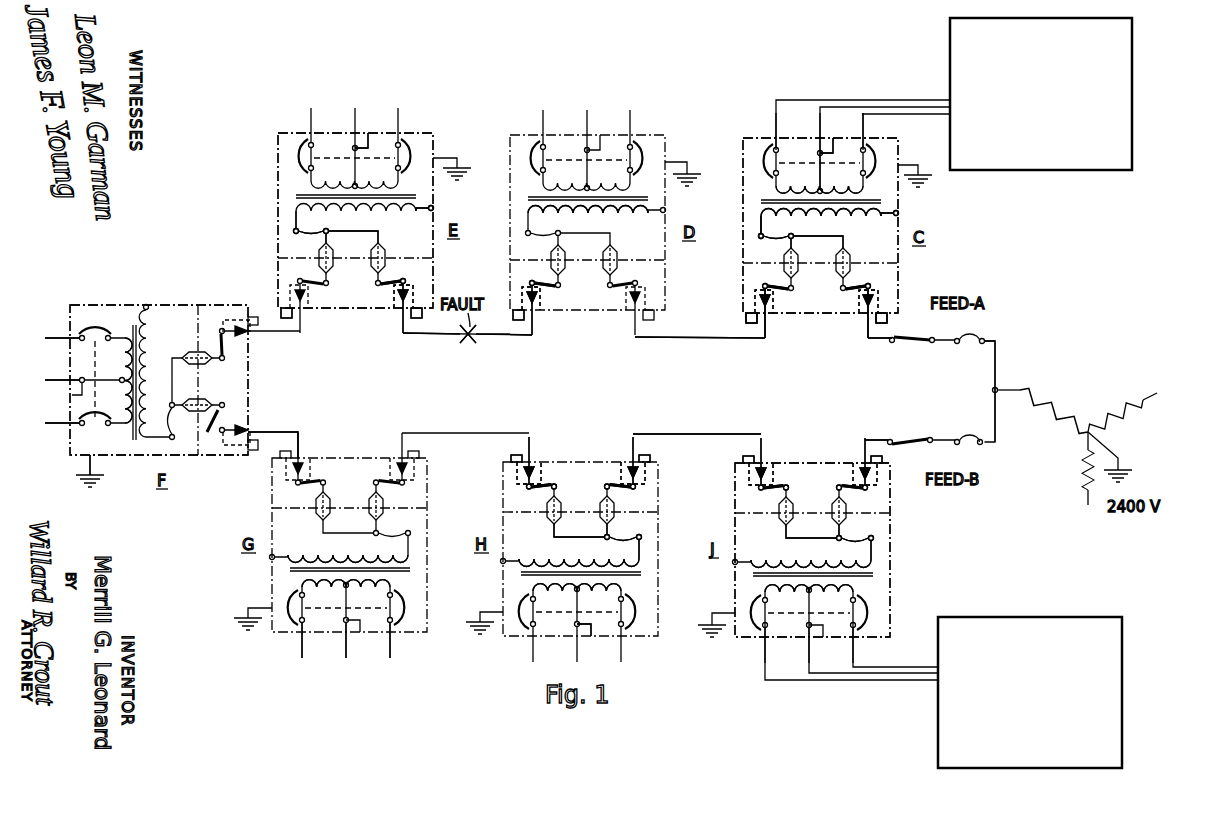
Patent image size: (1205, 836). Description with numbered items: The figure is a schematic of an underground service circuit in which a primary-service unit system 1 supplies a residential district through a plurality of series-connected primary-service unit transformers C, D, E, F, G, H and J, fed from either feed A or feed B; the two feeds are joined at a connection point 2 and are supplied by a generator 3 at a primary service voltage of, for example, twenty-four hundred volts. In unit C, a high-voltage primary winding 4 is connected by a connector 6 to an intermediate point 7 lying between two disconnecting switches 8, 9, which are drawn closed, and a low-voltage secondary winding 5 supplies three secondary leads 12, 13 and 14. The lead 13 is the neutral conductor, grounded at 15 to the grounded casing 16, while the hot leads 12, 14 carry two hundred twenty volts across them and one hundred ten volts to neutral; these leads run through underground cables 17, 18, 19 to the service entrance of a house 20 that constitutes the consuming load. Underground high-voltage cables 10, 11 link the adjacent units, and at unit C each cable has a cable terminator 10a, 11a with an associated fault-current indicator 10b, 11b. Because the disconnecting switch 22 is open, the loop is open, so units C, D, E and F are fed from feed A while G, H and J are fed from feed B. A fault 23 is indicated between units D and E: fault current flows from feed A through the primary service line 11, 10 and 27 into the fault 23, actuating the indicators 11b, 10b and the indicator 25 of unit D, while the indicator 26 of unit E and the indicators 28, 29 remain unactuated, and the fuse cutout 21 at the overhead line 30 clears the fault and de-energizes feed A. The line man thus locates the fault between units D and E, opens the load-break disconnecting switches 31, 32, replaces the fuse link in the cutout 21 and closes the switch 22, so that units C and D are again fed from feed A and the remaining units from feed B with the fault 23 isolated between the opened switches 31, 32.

The primary-service unit system 1 is at (1017, 243).
The connection point of feed A and feed B 2 is at (992, 390).
The generator 3 is at (1099, 399).
The high-voltage primary winding 4 is at (626, 214).
The low-voltage secondary winding 5 is at (843, 191).
The connector 6 is at (754, 239).
The intermediate point 7 is at (349, 232).
The disconnecting switch 8 is at (783, 286).
The disconnecting switch 9 is at (867, 286).
The underground high-voltage cable 10 is at (710, 340).
The cable terminator 10a is at (771, 303).
The fault-current indicator 10b is at (746, 319).
The underground high-voltage cable 11 is at (880, 340).
The cable terminator 11a is at (865, 303).
The fault-current indicator 11b is at (899, 315).
The secondary low-voltage lead 12 is at (864, 128).
The neutral conductor 13 is at (816, 122).
The secondary low-voltage lead 14 is at (775, 122).
The ground connection 15 is at (838, 130).
The grounded casing 16 is at (278, 172).
The underground cable 17 is at (900, 100).
The underground cable 18 is at (912, 107).
The underground cable 19 is at (928, 114).
The house 20 is at (1063, 170).
The fuse cutout 21 is at (962, 338).
The disconnecting switch 22 is at (250, 426).
The fault 23 is at (466, 343).
The fault-current indicator 25 is at (525, 335).
The fault-current indicator 26 is at (415, 334).
The primary service line 27 is at (500, 335).
The fault-current indicator 28 is at (293, 316).
The fault-current indicator 29 is at (256, 316).
The overhead line 30 is at (996, 365).
The load-break disconnecting switch 31 is at (541, 288).
The load-break disconnecting switch 32 is at (394, 292).